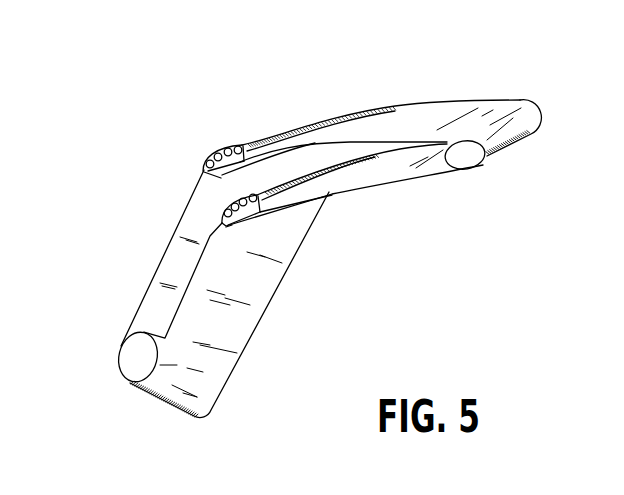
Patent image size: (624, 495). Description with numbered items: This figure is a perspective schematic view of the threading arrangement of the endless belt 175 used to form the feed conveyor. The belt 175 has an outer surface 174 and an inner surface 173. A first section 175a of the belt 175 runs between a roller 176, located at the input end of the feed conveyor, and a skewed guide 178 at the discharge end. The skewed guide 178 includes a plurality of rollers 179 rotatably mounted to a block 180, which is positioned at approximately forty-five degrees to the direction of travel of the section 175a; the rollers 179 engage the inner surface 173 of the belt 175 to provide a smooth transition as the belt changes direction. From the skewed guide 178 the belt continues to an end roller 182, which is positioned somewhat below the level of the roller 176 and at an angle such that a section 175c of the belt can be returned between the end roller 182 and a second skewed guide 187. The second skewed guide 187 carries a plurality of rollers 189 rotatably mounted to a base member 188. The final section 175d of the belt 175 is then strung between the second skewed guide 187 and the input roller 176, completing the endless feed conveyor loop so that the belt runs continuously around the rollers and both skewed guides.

The inner surface 173 is at (287, 245).
The outer surface 174 is at (381, 110).
The endless belt 175 is at (501, 94).
The first section of belt 175a is at (403, 103).
The section of belt 175c is at (247, 352).
The final section of belt 175d is at (417, 176).
The roller 176 is at (475, 164).
The skewed guide 178 is at (218, 180).
The rollers 179 is at (224, 150).
The block 180 is at (207, 160).
The end roller 182 is at (120, 368).
The second skewed guide 187 is at (233, 240).
The base member 188 is at (237, 219).
The rollers 189 is at (261, 210).